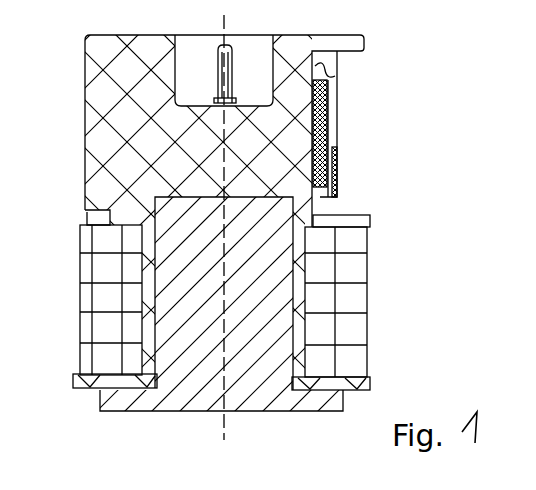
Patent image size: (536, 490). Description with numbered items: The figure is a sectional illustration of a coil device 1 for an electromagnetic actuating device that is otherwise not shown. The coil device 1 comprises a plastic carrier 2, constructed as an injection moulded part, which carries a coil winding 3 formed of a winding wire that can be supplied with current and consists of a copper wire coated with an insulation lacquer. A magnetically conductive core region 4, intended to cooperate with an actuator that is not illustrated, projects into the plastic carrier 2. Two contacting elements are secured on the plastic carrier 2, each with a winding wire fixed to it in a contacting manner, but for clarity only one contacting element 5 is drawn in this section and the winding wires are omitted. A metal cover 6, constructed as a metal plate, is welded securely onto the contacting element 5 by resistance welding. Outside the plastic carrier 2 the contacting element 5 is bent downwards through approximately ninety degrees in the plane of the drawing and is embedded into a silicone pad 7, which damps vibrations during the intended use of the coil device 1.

The coil device 1 is at (403, 176).
The plastic carrier 2 is at (110, 155).
The coil winding 3 is at (343, 280).
The core region 4 is at (175, 388).
The contacting element 5 is at (334, 80).
The metal cover 6 is at (340, 154).
The silicone pad 7 is at (326, 128).